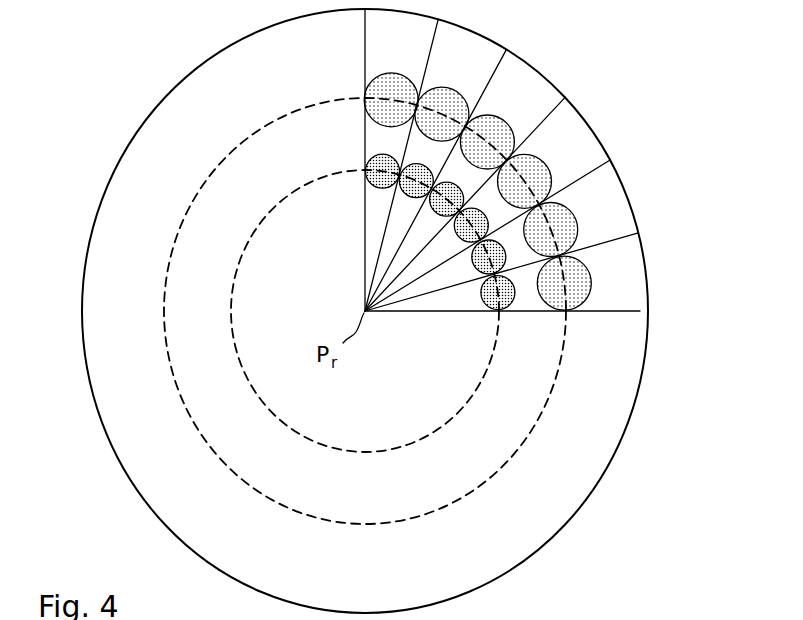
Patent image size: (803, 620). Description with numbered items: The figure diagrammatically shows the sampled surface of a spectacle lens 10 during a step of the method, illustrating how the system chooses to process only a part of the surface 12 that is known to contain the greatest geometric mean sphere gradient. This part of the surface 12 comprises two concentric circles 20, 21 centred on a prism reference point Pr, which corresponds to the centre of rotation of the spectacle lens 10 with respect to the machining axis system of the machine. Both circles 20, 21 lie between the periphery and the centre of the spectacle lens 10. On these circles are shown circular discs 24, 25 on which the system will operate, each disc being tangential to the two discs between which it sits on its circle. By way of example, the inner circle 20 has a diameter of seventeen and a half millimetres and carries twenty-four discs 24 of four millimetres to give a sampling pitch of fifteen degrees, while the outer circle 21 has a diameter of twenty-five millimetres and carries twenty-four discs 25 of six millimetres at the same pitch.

The spectacle lens 10 is at (402, 311).
The surface 12 is at (566, 510).
The circle 20 is at (432, 437).
The circle 21 is at (480, 491).
The circular discs 24 is at (485, 311).
The circular discs 25 is at (585, 282).